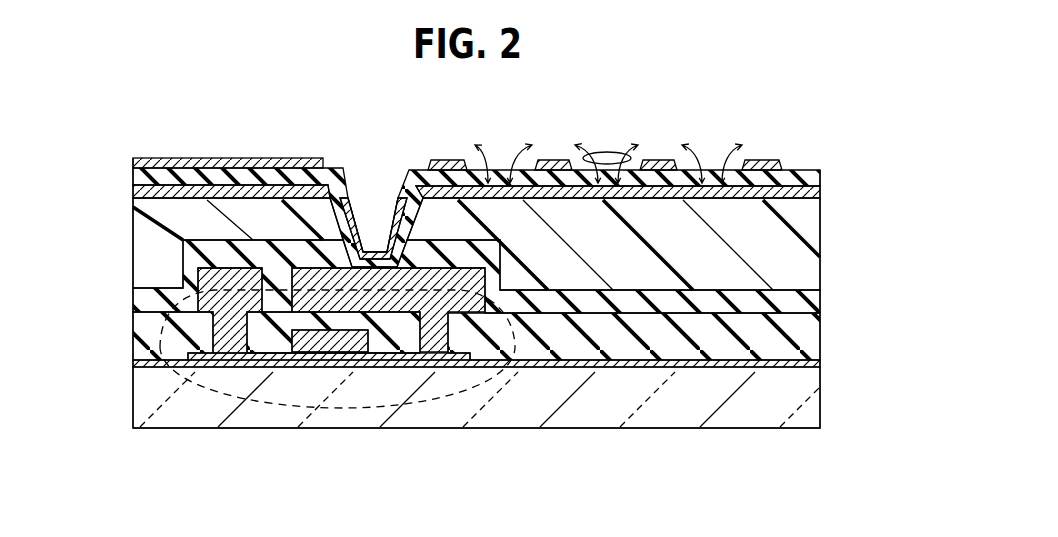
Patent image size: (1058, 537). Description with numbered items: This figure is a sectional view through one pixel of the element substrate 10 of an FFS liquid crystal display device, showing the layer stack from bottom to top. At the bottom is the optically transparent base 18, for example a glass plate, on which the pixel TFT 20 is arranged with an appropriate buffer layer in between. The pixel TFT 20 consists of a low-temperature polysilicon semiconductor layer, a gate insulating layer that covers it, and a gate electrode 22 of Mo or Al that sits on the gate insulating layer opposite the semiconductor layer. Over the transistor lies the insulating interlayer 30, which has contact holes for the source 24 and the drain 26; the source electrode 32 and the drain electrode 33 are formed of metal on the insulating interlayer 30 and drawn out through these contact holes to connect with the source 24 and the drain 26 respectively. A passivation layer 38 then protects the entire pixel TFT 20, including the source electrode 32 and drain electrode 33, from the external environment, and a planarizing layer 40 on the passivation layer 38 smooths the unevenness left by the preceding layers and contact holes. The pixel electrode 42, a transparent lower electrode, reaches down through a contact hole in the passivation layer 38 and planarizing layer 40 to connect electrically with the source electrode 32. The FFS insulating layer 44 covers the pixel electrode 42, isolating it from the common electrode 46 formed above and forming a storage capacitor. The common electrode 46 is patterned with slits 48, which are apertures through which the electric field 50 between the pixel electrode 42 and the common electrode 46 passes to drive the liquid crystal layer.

The element substrate 10 is at (165, 136).
The optically transparent base 18 is at (800, 400).
The pixel TFT 20 is at (370, 408).
The gate electrode 22 is at (315, 370).
The source 24 is at (432, 370).
The drain 26 is at (228, 370).
The insulating interlayer 30 is at (822, 345).
The source electrode 32 is at (496, 318).
The drain electrode 33 is at (172, 369).
The passivation layer 38 is at (822, 297).
The planarizing layer 40 is at (805, 246).
The pixel electrode 42 is at (822, 190).
The FFS insulating layer 44 is at (812, 170).
The common electrode 46 is at (776, 160).
The slits 48 is at (708, 154).
The electric field 50 is at (608, 153).